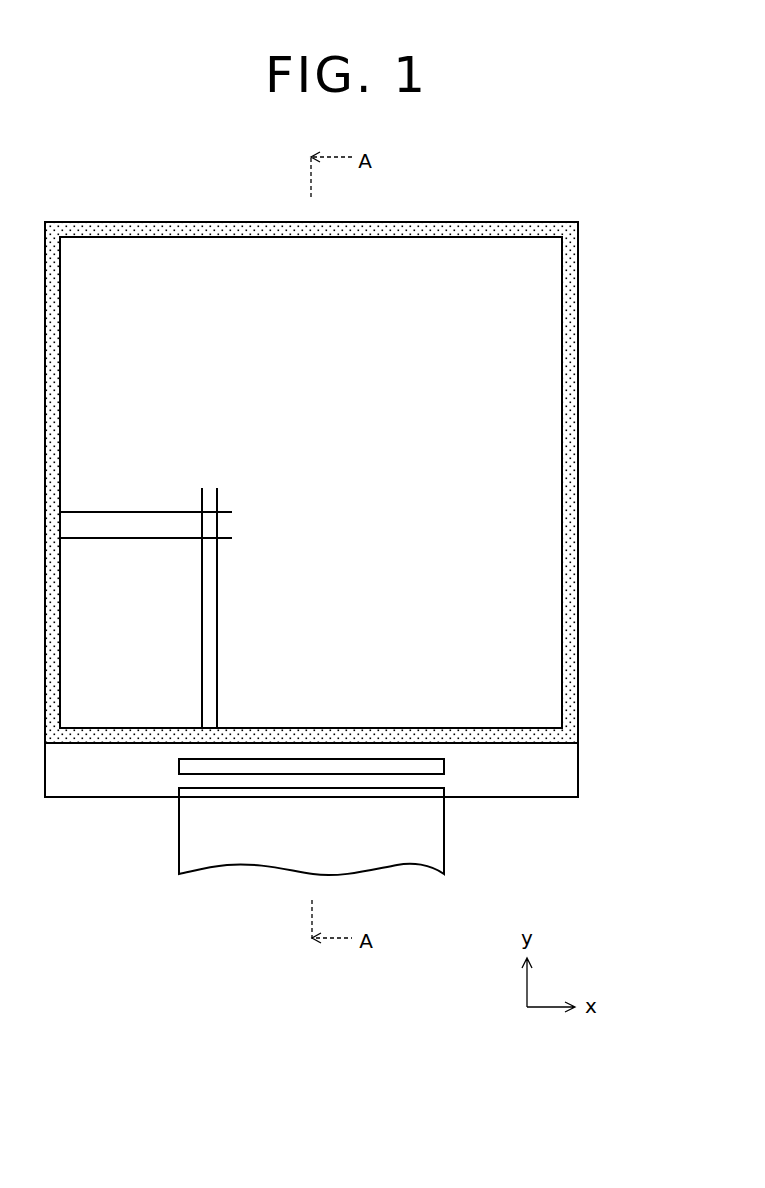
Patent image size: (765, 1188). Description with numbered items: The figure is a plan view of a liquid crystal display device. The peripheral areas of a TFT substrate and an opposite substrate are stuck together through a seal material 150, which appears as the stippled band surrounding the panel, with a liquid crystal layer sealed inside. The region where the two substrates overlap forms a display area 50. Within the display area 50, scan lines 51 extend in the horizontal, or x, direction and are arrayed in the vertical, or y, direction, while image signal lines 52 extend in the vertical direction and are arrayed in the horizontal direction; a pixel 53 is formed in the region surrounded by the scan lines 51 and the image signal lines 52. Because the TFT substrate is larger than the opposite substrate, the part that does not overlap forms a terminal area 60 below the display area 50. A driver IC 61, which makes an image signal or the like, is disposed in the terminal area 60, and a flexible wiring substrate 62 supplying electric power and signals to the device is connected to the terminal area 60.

The display area 50 is at (518, 338).
The seal material 150 is at (568, 412).
The scan lines 51 is at (125, 511).
The image signal lines 52 is at (218, 606).
The pixel 53 is at (209, 526).
The terminal area 60 is at (532, 787).
The driver IC 61 is at (178, 763).
The flexible wiring substrate 62 is at (192, 843).